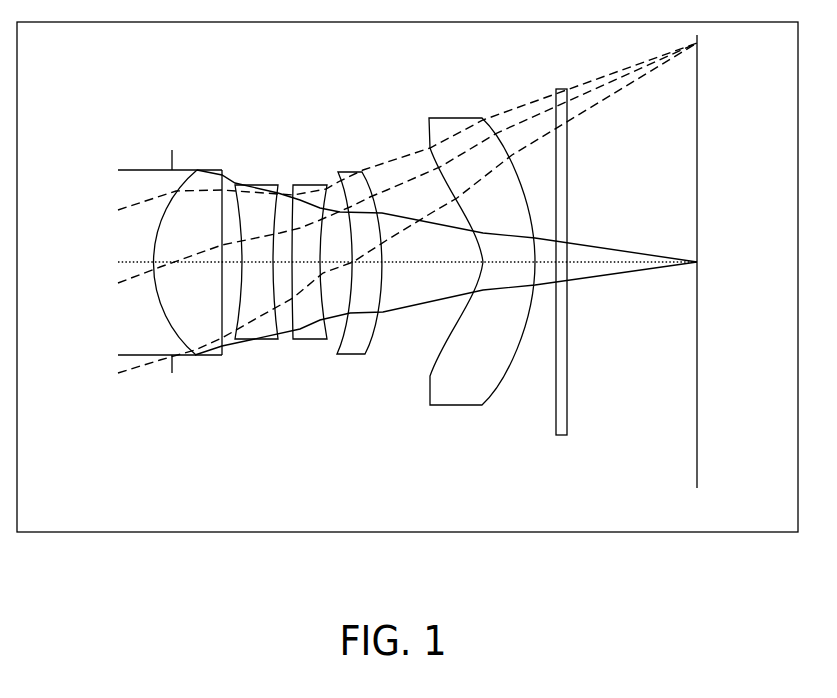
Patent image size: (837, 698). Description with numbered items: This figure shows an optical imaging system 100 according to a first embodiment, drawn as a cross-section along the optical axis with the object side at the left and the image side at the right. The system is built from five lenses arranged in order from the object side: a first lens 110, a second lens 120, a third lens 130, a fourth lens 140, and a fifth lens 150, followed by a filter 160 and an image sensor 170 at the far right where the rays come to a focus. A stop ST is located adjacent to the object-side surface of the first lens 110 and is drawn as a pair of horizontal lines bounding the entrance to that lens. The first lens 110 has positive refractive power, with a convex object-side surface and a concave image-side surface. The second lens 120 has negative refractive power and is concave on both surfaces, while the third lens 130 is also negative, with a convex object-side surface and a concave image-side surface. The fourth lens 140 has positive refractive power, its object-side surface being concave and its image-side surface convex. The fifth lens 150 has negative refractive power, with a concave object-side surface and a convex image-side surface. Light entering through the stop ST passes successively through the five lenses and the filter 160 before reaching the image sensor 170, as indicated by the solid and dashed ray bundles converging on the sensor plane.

The optical imaging system 100 is at (332, 100).
The stop ST is at (170, 364).
The first lens 110 is at (200, 356).
The second lens 120 is at (260, 340).
The third lens 130 is at (312, 340).
The fourth lens 140 is at (350, 356).
The fifth lens 150 is at (458, 406).
The filter 160 is at (563, 436).
The image sensor 170 is at (696, 397).